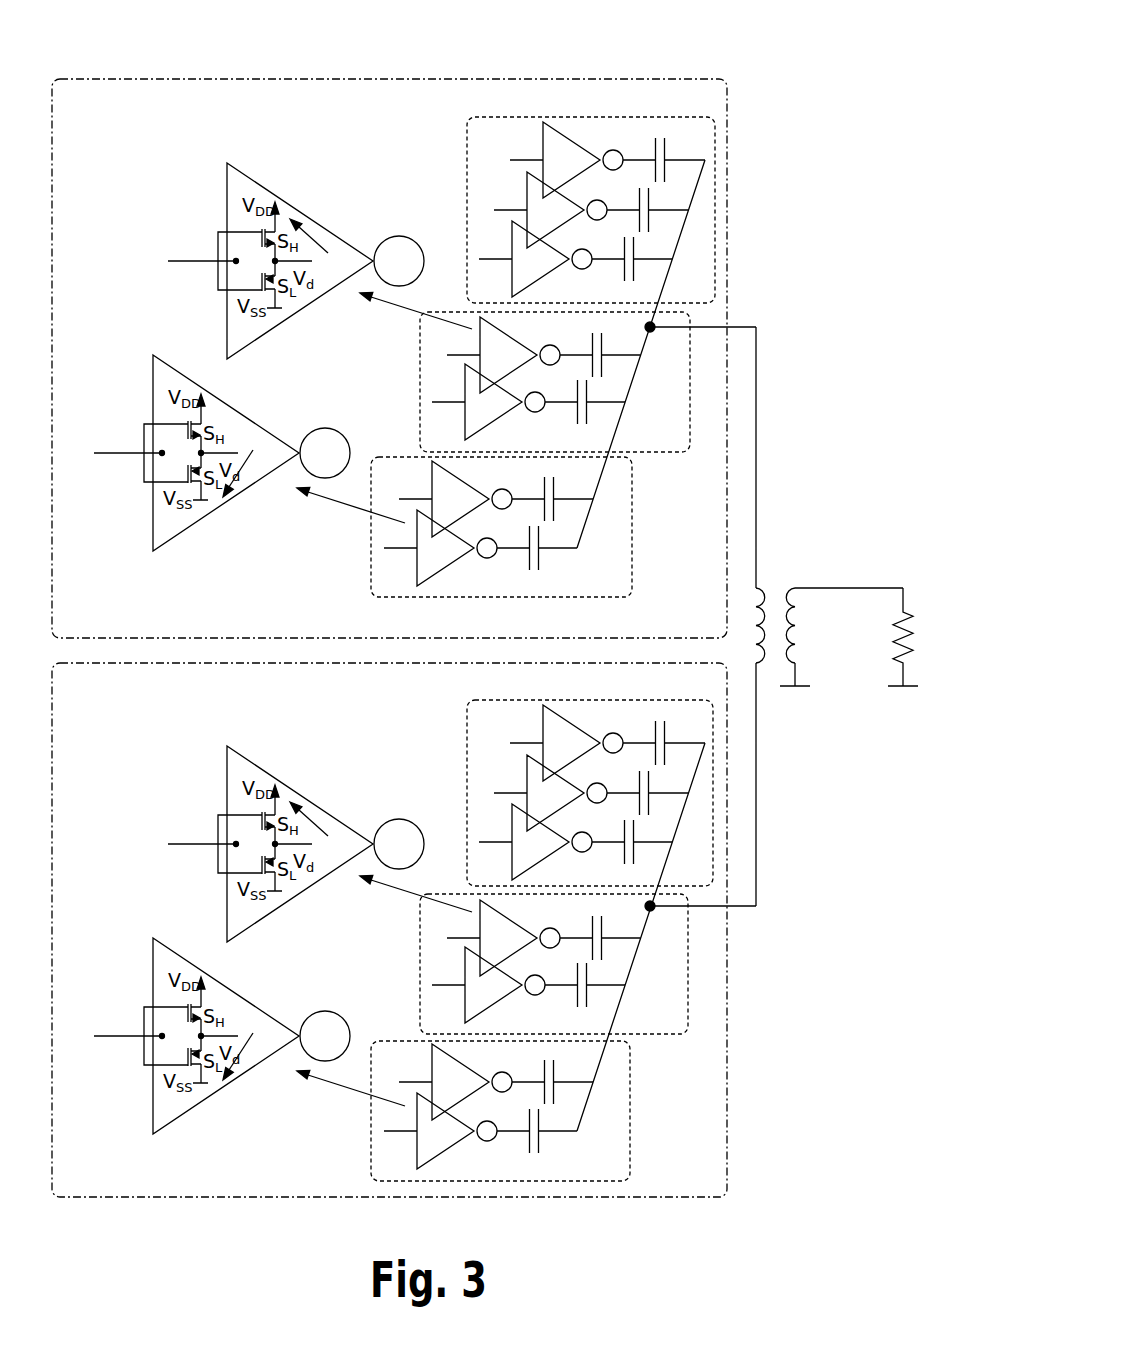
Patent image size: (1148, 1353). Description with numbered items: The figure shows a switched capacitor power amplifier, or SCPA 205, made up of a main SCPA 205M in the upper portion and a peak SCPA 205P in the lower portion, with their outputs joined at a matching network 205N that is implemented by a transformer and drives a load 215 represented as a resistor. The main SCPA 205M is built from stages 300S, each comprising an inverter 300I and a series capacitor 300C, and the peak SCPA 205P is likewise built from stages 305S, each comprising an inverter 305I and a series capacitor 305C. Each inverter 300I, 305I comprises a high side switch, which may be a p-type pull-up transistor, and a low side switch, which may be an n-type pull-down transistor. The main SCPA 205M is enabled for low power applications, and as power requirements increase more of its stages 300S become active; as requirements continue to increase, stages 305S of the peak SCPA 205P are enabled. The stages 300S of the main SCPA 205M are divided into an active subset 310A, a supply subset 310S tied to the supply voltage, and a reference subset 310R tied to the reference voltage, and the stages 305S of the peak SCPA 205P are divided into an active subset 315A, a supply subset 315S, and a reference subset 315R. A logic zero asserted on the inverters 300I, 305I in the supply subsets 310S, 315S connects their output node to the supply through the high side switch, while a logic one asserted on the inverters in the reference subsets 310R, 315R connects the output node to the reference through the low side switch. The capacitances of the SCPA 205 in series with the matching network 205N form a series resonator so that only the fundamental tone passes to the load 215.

The switched capacitor power amplifier (SCPA) 205 is at (866, 32).
The main SCPA 205M is at (350, 78).
The peak SCPA 205P is at (353, 663).
The matching network 205N is at (811, 552).
The load 215 is at (897, 722).
The inverter 300I is at (240, 193).
The stage 300S is at (482, 160).
The series capacitor 300C is at (663, 143).
The active subset 310A is at (715, 245).
The supply subset 310S is at (690, 382).
The reference subset 310R is at (632, 517).
The inverter 305I is at (240, 776).
The stage 305S is at (437, 752).
The series capacitor 305C is at (665, 758).
The active subset 315A is at (713, 866).
The supply subset 315S is at (688, 970).
The reference subset 315R is at (630, 1090).